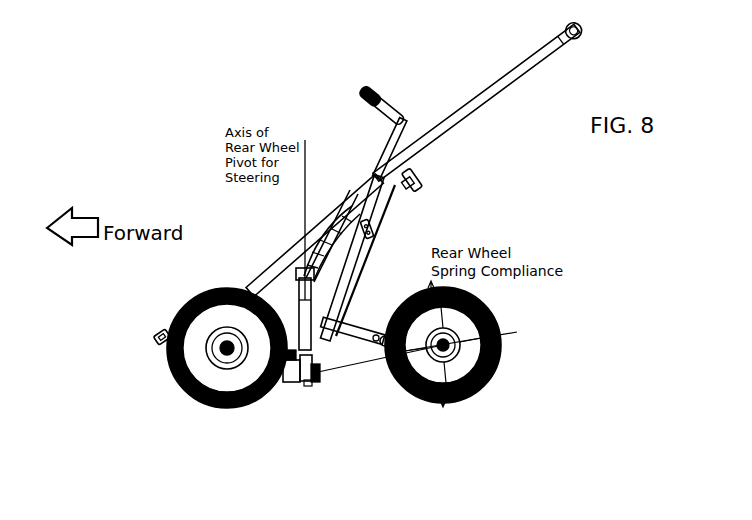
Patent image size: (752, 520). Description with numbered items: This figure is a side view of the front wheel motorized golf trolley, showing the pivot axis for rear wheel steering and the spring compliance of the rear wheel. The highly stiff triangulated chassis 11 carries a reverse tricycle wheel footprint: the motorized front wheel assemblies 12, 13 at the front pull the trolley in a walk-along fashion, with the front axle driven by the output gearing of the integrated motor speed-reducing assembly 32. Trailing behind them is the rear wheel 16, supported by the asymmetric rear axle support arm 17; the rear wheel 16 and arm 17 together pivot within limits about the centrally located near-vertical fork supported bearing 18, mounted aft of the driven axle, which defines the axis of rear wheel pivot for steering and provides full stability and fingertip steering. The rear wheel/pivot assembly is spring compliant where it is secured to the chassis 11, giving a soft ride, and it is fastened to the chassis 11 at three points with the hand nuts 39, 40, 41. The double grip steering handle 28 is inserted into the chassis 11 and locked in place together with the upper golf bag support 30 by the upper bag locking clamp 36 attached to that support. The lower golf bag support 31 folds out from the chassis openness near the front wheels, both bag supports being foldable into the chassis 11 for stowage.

The chassis 11 is at (285, 260).
The front wheel assembly 12 is at (190, 395).
The front wheel assembly 13 is at (279, 398).
The rear wheel 16 is at (498, 372).
The asymmetric rear axle support arm 17 is at (340, 320).
The fork supported bearing 18 is at (340, 278).
The steering handle 28 is at (476, 122).
The upper golf bag support 30 is at (400, 108).
The lower golf bag support 31 is at (158, 344).
The motor speed-reducing assembly 32 is at (292, 302).
The upper bag locking clamp 36 is at (418, 190).
The hand nut 39 is at (312, 388).
The hand nut 40 is at (326, 372).
The hand nut 41 is at (372, 236).